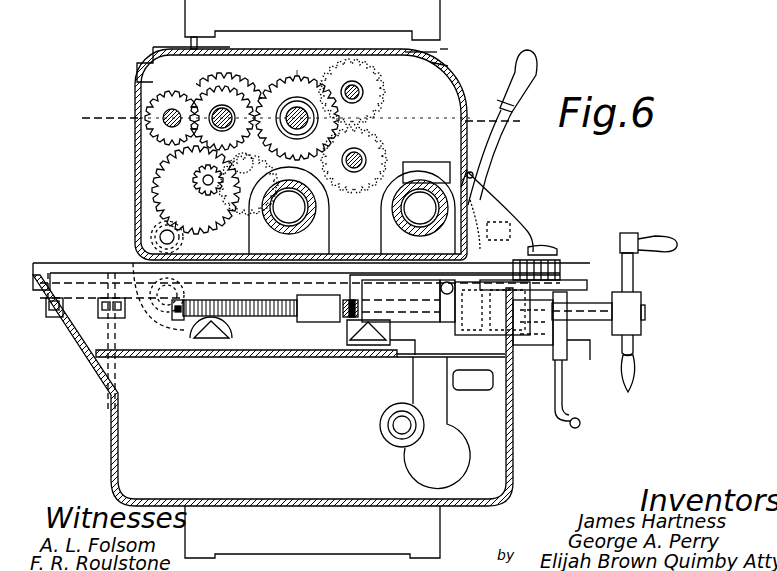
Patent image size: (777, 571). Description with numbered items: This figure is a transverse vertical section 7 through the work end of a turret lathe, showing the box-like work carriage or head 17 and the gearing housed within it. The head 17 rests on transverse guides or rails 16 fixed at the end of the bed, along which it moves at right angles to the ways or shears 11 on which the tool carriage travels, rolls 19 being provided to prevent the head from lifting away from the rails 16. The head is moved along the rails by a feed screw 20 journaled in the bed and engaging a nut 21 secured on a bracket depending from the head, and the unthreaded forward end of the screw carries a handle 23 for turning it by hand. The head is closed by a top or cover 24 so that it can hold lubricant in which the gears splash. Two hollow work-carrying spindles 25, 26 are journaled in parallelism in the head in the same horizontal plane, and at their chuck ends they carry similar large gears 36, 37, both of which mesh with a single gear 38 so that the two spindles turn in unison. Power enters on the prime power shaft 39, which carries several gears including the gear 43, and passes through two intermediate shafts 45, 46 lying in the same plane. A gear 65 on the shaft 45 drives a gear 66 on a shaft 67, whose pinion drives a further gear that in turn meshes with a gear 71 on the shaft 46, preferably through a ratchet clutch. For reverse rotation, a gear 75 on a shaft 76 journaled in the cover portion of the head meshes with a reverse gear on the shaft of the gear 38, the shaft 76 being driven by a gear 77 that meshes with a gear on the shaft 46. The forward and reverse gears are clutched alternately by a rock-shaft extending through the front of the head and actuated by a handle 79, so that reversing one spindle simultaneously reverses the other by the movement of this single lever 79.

The shaft axis 7 is at (299, 120).
The ways or shears 11 is at (205, 334).
The transverse guides or rails 16 is at (60, 263).
The work carriage or head 17 is at (470, 115).
The rolls 19 is at (146, 280).
The feed screw 20 is at (268, 317).
The nut 21 is at (305, 320).
The handle 23 is at (632, 280).
The top or cover 24 is at (448, 80).
The work-carrying spindle 25 is at (445, 140).
The work-carrying spindle 26 is at (260, 207).
The large gear 36 is at (392, 114).
The large gear 37 is at (242, 232).
The gear 38 is at (387, 96).
The prime power shaft 39 is at (165, 112).
The gear 43 is at (166, 88).
The intermediate shaft 45 is at (240, 98).
The intermediate shaft 46 is at (282, 96).
The gear 65 is at (236, 78).
The gear 66 is at (167, 187).
The shaft 67 is at (183, 178).
The gear 71 is at (297, 68).
The gear 75 is at (440, 64).
The shaft 76 is at (402, 52).
The gear 77 is at (420, 44).
The handle 79 is at (490, 142).